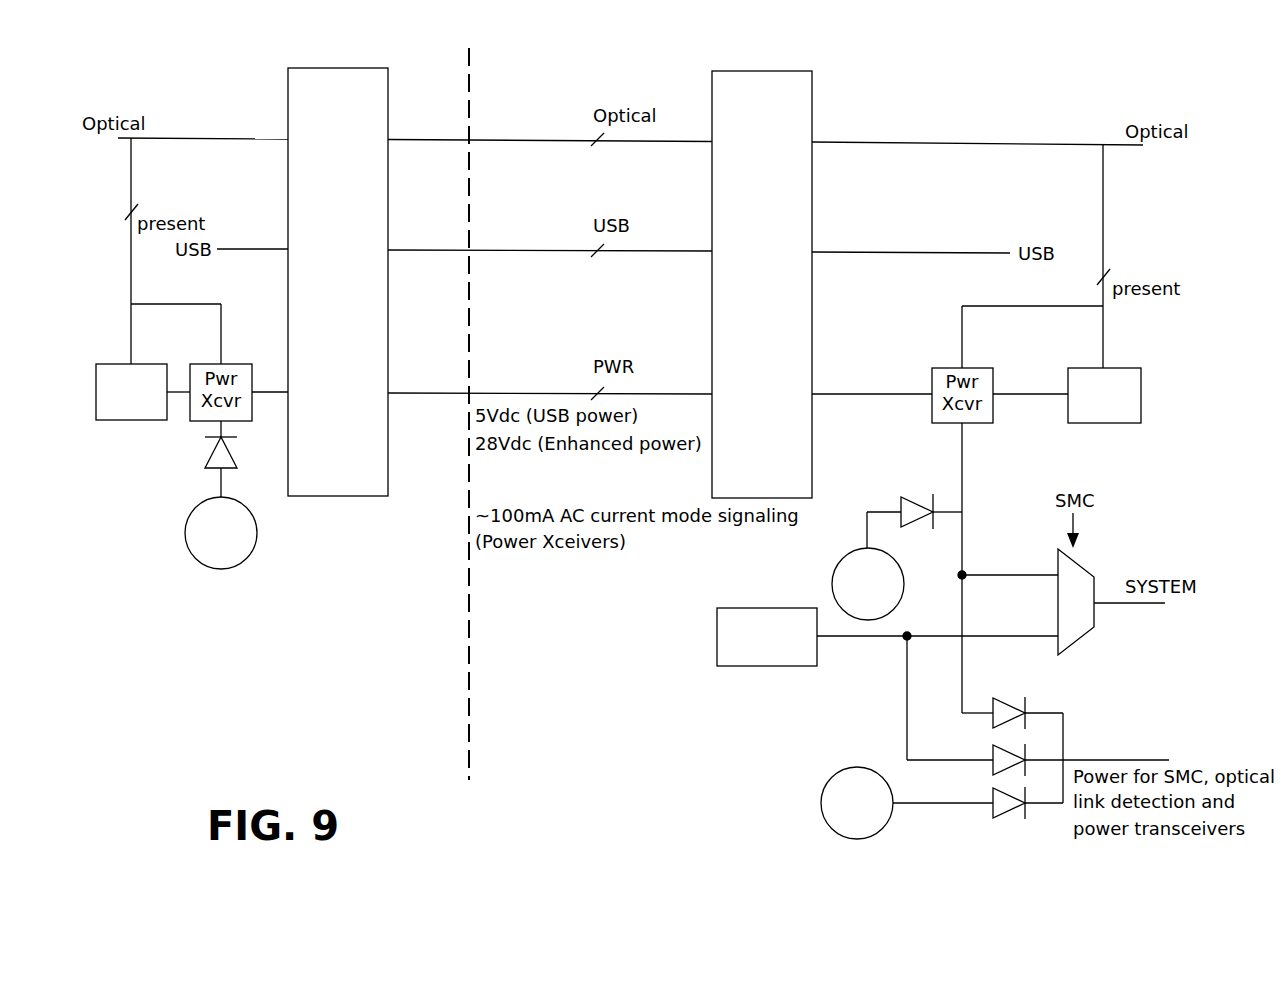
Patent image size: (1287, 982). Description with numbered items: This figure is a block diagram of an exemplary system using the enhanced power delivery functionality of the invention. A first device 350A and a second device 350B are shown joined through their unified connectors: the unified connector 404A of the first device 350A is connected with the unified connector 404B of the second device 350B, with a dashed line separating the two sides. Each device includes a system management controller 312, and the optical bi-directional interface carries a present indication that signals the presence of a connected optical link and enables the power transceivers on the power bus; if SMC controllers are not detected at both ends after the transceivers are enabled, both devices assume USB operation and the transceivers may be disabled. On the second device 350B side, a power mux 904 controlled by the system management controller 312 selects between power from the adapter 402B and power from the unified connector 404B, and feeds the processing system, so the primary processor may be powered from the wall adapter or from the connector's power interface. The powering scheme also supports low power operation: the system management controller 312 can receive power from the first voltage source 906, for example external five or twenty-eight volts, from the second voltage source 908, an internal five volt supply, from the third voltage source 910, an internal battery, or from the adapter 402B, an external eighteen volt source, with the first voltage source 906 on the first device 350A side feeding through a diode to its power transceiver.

The system management controller 312 is at (123, 420).
The unified connector 404A is at (370, 486).
The unified connector 404B is at (751, 489).
The adapter 402B is at (745, 659).
The V1 906 is at (250, 558).
The V2 908 is at (839, 563).
The V3 910 is at (828, 783).
The power mux 904 is at (1073, 643).
The device 350A is at (382, 716).
The device 350B is at (567, 716).